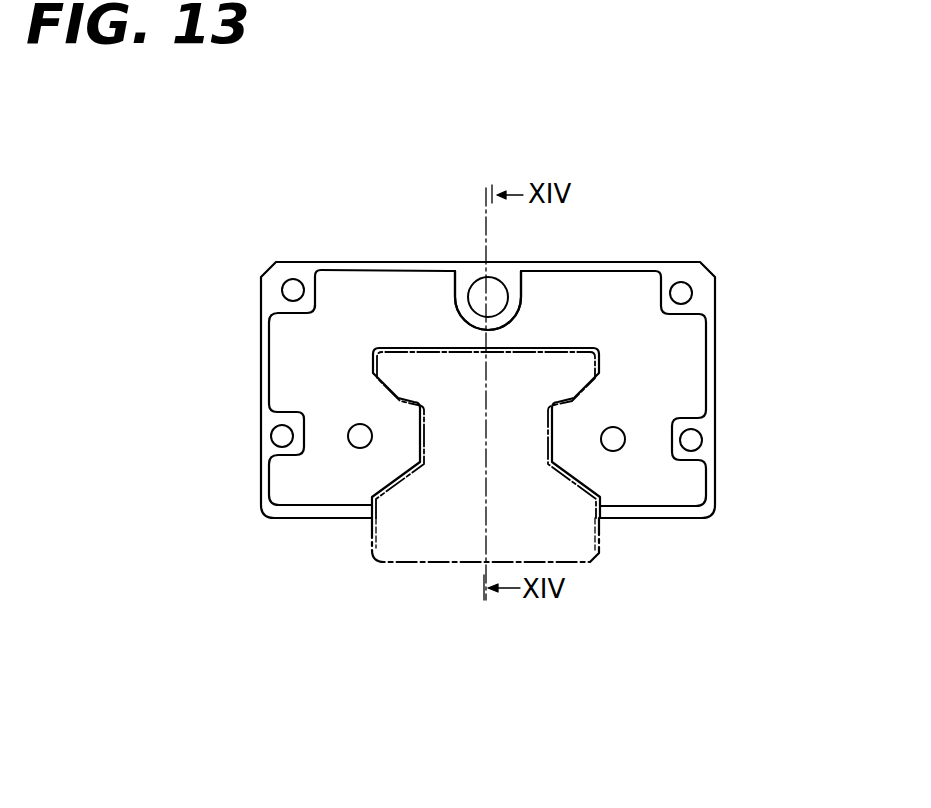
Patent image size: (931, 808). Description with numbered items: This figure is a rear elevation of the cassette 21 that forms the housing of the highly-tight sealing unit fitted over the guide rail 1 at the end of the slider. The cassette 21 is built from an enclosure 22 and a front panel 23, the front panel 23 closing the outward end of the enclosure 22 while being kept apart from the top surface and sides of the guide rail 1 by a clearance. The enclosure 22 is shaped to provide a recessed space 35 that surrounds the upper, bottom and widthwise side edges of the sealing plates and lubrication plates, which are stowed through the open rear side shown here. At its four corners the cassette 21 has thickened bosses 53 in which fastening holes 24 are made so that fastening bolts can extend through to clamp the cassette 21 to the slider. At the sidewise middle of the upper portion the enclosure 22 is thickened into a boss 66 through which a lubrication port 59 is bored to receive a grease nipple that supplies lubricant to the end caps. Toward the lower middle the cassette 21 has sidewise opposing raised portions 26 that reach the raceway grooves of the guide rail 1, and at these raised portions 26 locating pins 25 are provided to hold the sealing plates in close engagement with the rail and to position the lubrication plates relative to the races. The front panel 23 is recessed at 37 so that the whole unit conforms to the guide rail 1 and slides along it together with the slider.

The guide rail 1 is at (552, 533).
The cassette 21 is at (612, 259).
The enclosure 22 is at (383, 266).
The front panel 23 is at (606, 313).
The fastening holes 24 is at (292, 290).
The locating pins 25 is at (360, 440).
The raised portions 26 is at (410, 437).
The recessed space 35 is at (356, 320).
The recess 37 is at (459, 360).
The thickened bosses 53 is at (268, 292).
The lubrication port 59 is at (480, 292).
The boss 66 is at (462, 305).